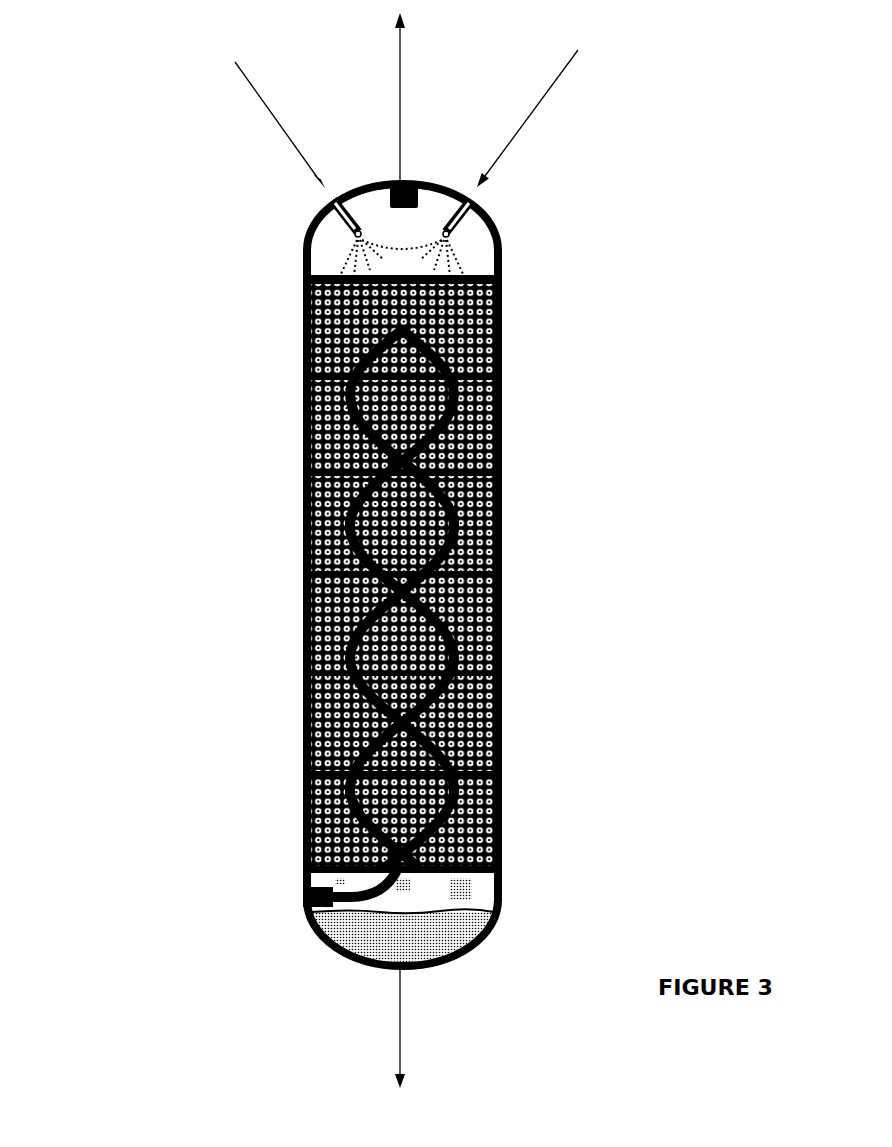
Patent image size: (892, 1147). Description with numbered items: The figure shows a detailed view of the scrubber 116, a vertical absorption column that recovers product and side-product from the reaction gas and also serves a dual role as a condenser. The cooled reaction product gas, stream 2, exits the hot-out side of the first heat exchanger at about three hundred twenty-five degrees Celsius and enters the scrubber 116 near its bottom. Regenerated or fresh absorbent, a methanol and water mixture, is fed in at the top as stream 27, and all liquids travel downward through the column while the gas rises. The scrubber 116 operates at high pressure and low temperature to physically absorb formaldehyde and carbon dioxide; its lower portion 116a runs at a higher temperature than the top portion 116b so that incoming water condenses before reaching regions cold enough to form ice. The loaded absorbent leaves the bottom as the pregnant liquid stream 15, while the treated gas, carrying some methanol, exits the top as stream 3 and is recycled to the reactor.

The stream 2 is at (289, 900).
The stream 3 is at (419, 96).
The pregnant liquid stream 15 is at (420, 1029).
The stream 27 is at (410, 119).
The scrubber 116 is at (628, 525).
The lower portion 116a is at (226, 766).
The top portion 116b is at (224, 330).